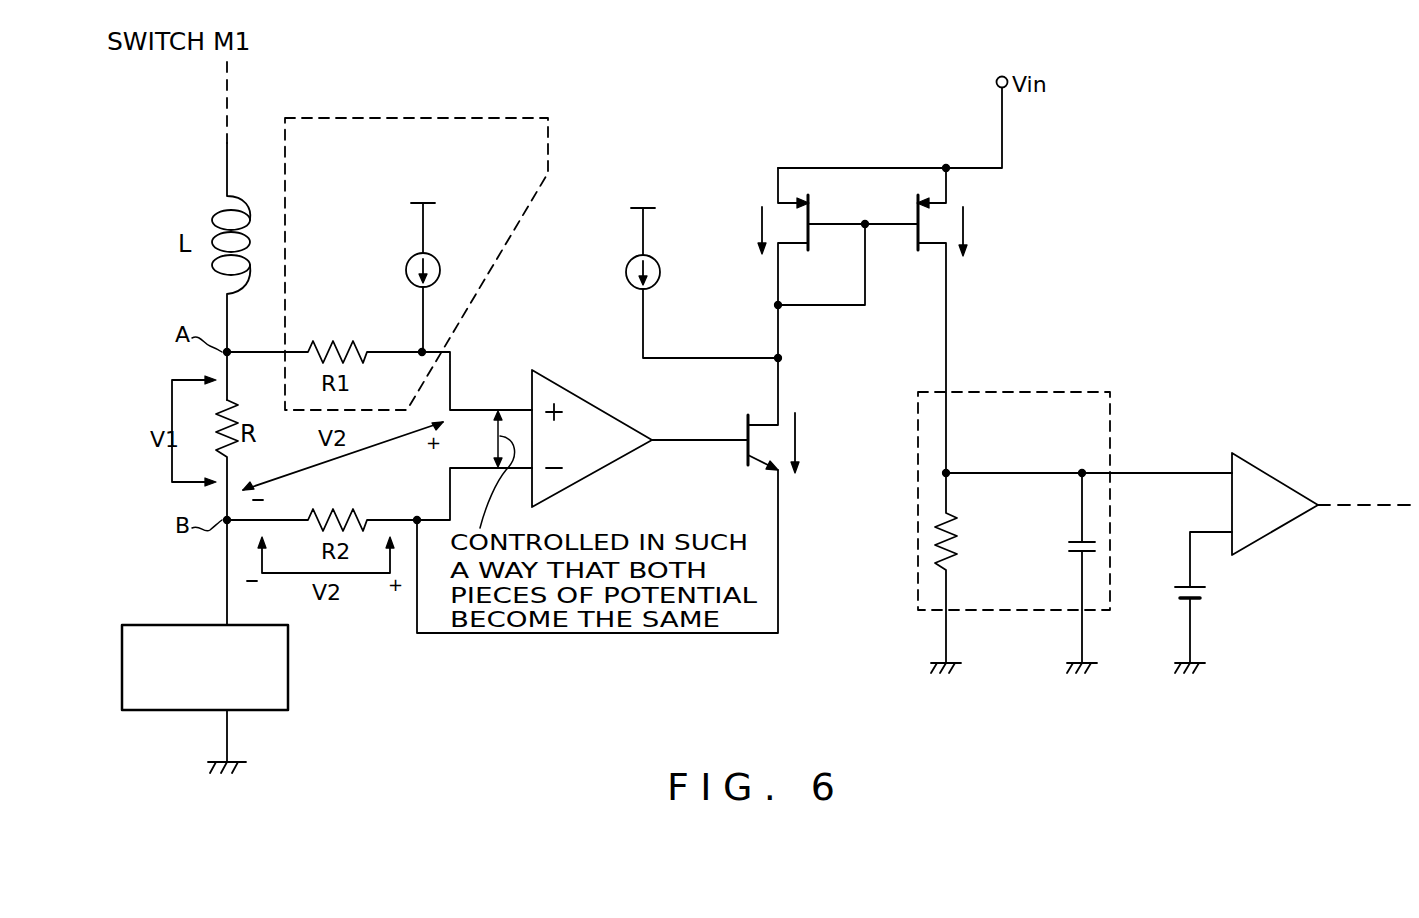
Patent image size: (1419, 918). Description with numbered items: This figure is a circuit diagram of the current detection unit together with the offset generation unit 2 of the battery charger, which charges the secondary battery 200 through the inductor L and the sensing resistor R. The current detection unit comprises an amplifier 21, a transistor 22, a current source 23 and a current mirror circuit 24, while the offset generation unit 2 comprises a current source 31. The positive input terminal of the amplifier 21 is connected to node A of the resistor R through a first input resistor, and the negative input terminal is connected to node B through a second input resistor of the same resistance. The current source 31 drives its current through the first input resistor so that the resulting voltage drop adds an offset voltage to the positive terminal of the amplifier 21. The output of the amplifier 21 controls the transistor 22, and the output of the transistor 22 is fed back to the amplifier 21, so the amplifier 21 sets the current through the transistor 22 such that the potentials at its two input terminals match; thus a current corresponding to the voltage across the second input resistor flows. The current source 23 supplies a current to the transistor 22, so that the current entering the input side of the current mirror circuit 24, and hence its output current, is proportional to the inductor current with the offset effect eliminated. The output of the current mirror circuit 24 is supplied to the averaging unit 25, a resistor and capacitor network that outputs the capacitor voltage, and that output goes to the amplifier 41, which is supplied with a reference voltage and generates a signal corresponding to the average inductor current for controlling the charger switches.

The offset generation unit 2 is at (446, 118).
The current source 31 is at (440, 262).
The amplifier 21 is at (622, 418).
The transistor 22 is at (768, 466).
The current source 23 is at (660, 266).
The current mirror circuit 24 is at (865, 280).
The averaging unit 25 is at (1104, 392).
The amplifier 41 is at (1284, 482).
The secondary battery 200 is at (289, 670).